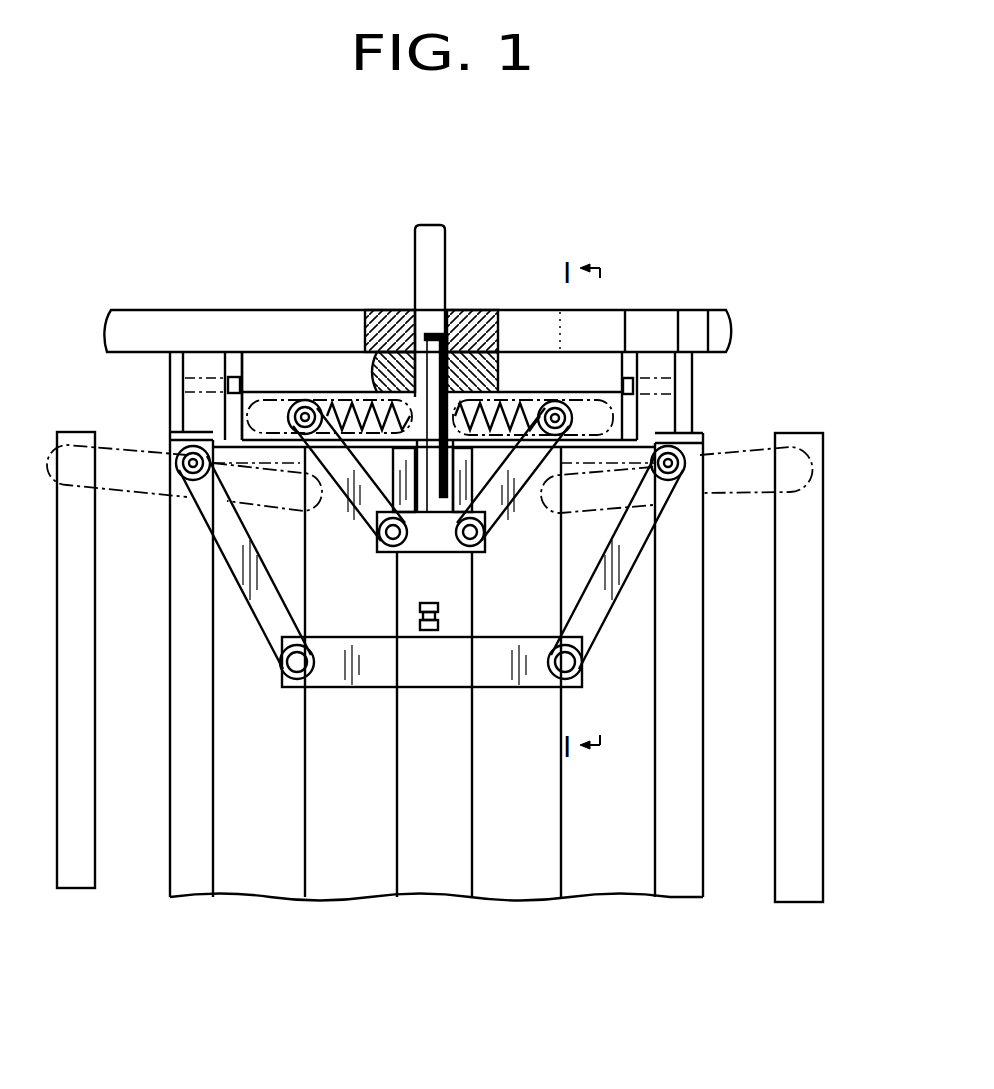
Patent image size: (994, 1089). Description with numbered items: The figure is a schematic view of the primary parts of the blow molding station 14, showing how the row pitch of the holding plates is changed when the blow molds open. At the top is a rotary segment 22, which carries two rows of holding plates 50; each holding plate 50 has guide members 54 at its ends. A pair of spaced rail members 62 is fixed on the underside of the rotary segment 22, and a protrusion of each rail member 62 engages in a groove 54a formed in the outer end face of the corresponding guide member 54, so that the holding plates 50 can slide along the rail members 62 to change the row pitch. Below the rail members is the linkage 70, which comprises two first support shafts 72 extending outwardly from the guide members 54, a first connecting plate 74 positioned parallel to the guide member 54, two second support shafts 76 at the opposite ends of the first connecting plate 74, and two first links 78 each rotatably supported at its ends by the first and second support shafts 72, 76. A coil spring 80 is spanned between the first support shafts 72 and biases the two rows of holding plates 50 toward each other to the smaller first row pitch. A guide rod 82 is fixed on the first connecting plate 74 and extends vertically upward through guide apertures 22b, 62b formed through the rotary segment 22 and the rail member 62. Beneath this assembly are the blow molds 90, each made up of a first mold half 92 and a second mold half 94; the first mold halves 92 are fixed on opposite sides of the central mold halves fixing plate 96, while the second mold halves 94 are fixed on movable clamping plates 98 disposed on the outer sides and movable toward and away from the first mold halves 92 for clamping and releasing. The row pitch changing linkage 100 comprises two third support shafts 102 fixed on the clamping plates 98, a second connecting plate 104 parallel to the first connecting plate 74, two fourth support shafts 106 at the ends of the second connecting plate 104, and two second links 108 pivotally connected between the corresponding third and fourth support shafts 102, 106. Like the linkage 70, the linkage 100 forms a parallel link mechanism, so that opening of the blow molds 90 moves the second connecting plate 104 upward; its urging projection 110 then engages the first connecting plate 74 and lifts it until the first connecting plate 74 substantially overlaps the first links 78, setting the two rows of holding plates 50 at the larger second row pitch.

The blow molding station 14 is at (698, 223).
The rotary segment 22 is at (128, 326).
The guide aperture 22b is at (446, 320).
The holding plate 50 is at (210, 418).
The guide member 54 is at (250, 412).
The groove 54a is at (235, 378).
The rail member 62 is at (284, 362).
The guide aperture 62b is at (417, 372).
The linkage 70 is at (553, 457).
The first support shaft 72 is at (312, 402).
The first connecting plate 74 is at (452, 553).
The second support shaft 76 is at (380, 534).
The first link 78 is at (345, 483).
The coil spring 80 is at (490, 425).
The guide rod 82 is at (416, 300).
The blow mold 90 is at (365, 962).
The first mold half 92 is at (343, 900).
The second mold half 94 is at (275, 900).
The central mold halves fixing plate 96 is at (436, 900).
The movable clamping plate 98 is at (60, 745).
The row pitch changing linkage 100 is at (612, 657).
The third support shaft 102 is at (185, 475).
The second connecting plate 104 is at (436, 690).
The fourth support shaft 106 is at (288, 672).
The second link 108 is at (240, 573).
The urging projection 110 is at (418, 613).